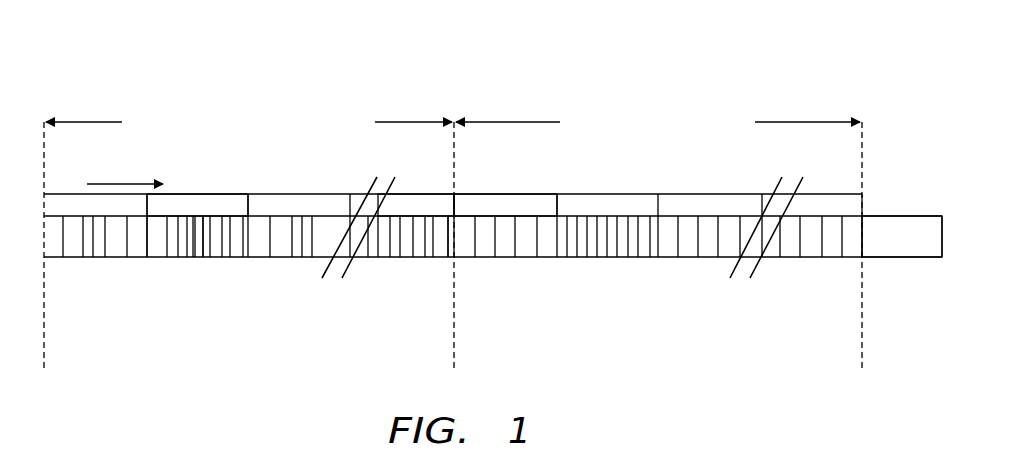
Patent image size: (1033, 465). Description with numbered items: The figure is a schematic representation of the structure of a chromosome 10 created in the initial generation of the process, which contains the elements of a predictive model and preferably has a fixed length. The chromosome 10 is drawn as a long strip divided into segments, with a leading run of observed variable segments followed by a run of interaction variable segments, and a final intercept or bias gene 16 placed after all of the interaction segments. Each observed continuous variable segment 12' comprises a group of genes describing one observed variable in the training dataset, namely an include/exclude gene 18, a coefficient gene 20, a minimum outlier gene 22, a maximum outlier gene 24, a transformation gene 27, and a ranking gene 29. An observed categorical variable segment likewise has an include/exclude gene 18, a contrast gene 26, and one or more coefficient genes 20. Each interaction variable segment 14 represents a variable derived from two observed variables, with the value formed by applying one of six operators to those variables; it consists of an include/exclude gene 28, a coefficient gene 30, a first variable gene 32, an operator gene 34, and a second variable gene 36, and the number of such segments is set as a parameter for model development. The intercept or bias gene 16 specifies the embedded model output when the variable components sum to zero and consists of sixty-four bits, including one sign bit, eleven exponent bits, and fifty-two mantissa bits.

The chromosome 10 is at (296, 89).
The observed continuous variable segment 12' is at (197, 182).
The interaction variable segment 14 is at (513, 194).
The intercept or bias gene 16 is at (910, 216).
The include/exclude gene 18 is at (153, 257).
The coefficient gene 20 is at (178, 257).
The minimum outlier gene 22 is at (193, 257).
The maximum outlier gene 24 is at (203, 257).
The contrast gene 26 is at (400, 257).
The transformation gene 27 is at (243, 257).
The include/exclude gene 28 is at (567, 257).
The ranking gene 29 is at (222, 257).
The coefficient gene 30 is at (587, 257).
The first variable gene 32 is at (607, 257).
The operator gene 34 is at (628, 257).
The second variable gene 36 is at (650, 257).